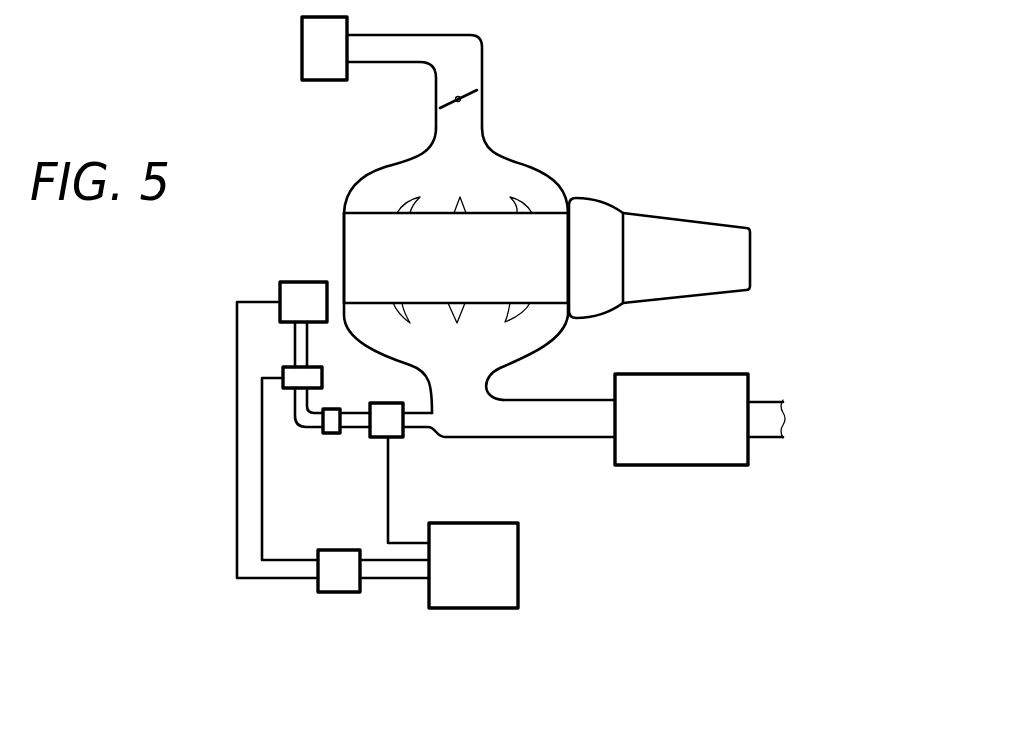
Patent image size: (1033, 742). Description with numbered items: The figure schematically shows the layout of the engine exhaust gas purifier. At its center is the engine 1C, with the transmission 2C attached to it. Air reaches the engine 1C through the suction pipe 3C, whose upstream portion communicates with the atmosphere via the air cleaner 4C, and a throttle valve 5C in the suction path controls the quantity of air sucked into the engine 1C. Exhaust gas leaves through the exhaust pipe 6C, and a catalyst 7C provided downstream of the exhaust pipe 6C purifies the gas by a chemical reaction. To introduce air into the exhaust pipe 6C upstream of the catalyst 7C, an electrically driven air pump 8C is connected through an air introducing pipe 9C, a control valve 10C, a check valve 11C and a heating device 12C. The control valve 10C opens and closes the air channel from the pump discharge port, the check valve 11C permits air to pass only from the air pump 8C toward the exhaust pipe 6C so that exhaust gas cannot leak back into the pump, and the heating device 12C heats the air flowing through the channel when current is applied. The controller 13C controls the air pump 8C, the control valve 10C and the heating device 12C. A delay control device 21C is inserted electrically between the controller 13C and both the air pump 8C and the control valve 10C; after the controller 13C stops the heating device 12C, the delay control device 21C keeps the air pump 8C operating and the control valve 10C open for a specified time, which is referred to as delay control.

The engine 1C is at (537, 222).
The transmission 2C is at (680, 235).
The suction pipe 3C is at (527, 178).
The air cleaner 4C is at (323, 70).
The throttle valve 5C is at (460, 100).
The exhaust pipe 6C is at (520, 425).
The catalyst 7C is at (674, 450).
The air pump 8C is at (296, 290).
The air introducing pipe 9C is at (301, 340).
The control valve 10C is at (310, 378).
The check valve 11C is at (330, 425).
The heating device 12C is at (395, 432).
The controller 13C is at (508, 547).
The delay control device 21C is at (337, 558).